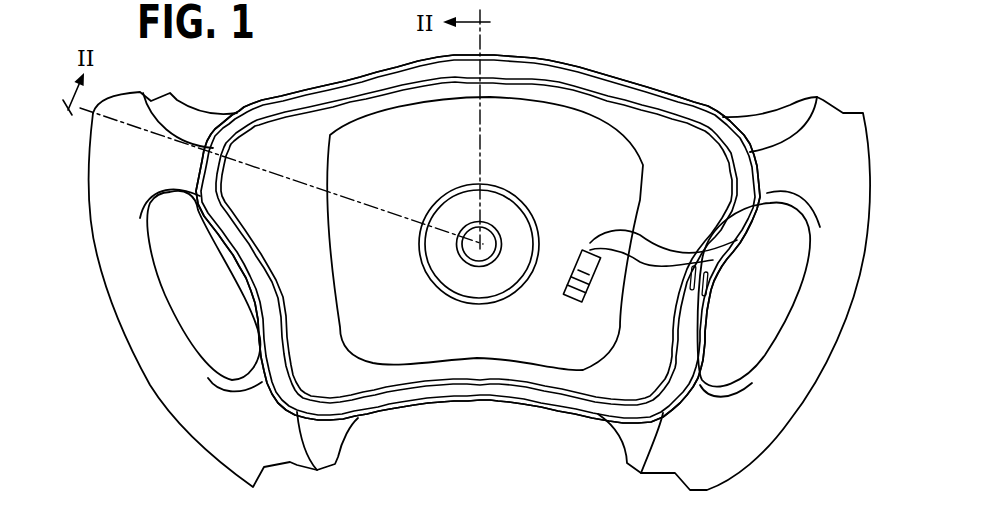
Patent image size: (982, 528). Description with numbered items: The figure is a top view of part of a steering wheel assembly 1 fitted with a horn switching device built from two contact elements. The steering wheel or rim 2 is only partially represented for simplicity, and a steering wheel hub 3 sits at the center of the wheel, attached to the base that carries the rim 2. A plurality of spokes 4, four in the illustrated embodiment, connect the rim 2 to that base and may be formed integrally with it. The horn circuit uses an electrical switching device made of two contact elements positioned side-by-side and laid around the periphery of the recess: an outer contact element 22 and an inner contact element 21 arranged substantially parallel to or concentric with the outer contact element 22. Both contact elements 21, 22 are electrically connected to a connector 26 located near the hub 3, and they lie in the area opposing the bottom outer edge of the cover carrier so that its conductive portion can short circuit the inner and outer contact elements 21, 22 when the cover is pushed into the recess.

The steering wheel assembly 1 is at (606, 62).
The steering wheel rim 2 is at (808, 337).
The steering wheel hub 3 is at (466, 242).
The spokes 4 is at (690, 410).
The inner contact element 21 is at (503, 380).
The outer contact element 22 is at (450, 403).
The connector 26 is at (583, 277).